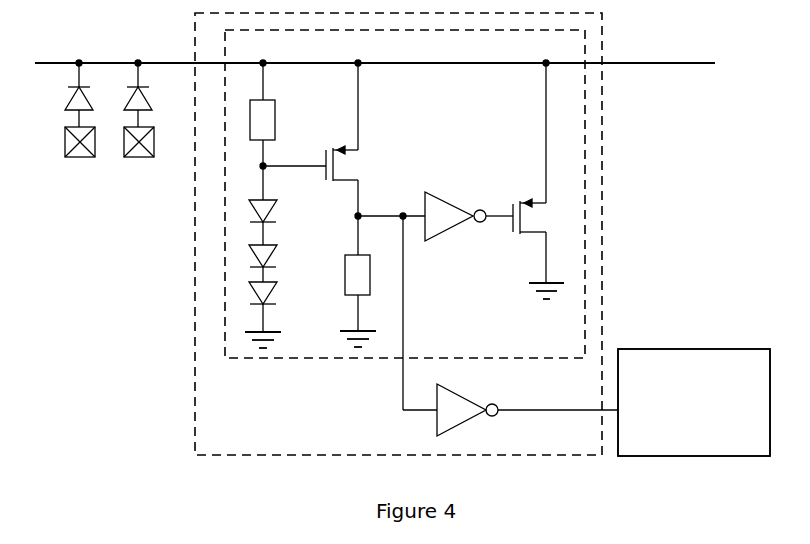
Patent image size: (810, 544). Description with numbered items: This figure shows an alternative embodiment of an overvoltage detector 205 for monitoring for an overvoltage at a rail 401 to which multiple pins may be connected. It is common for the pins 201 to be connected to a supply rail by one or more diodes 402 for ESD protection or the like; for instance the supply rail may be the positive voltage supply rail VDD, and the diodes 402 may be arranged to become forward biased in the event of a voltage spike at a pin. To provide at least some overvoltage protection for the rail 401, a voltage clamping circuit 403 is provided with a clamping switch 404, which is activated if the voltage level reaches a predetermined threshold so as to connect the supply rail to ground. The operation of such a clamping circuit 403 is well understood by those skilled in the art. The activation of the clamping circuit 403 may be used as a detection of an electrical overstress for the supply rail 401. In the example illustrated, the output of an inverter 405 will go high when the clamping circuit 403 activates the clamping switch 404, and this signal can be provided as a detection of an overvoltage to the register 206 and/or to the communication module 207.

The rail 401 is at (46, 63).
The diodes 402 is at (66, 100).
The pins 201 is at (138, 160).
The voltage clamping circuit 403 is at (458, 119).
The clamping switch 404 is at (510, 200).
The inverter 405 is at (460, 395).
The overvoltage detector 205 is at (283, 437).
The register 206 is at (690, 402).
The communication module 207 is at (683, 429).